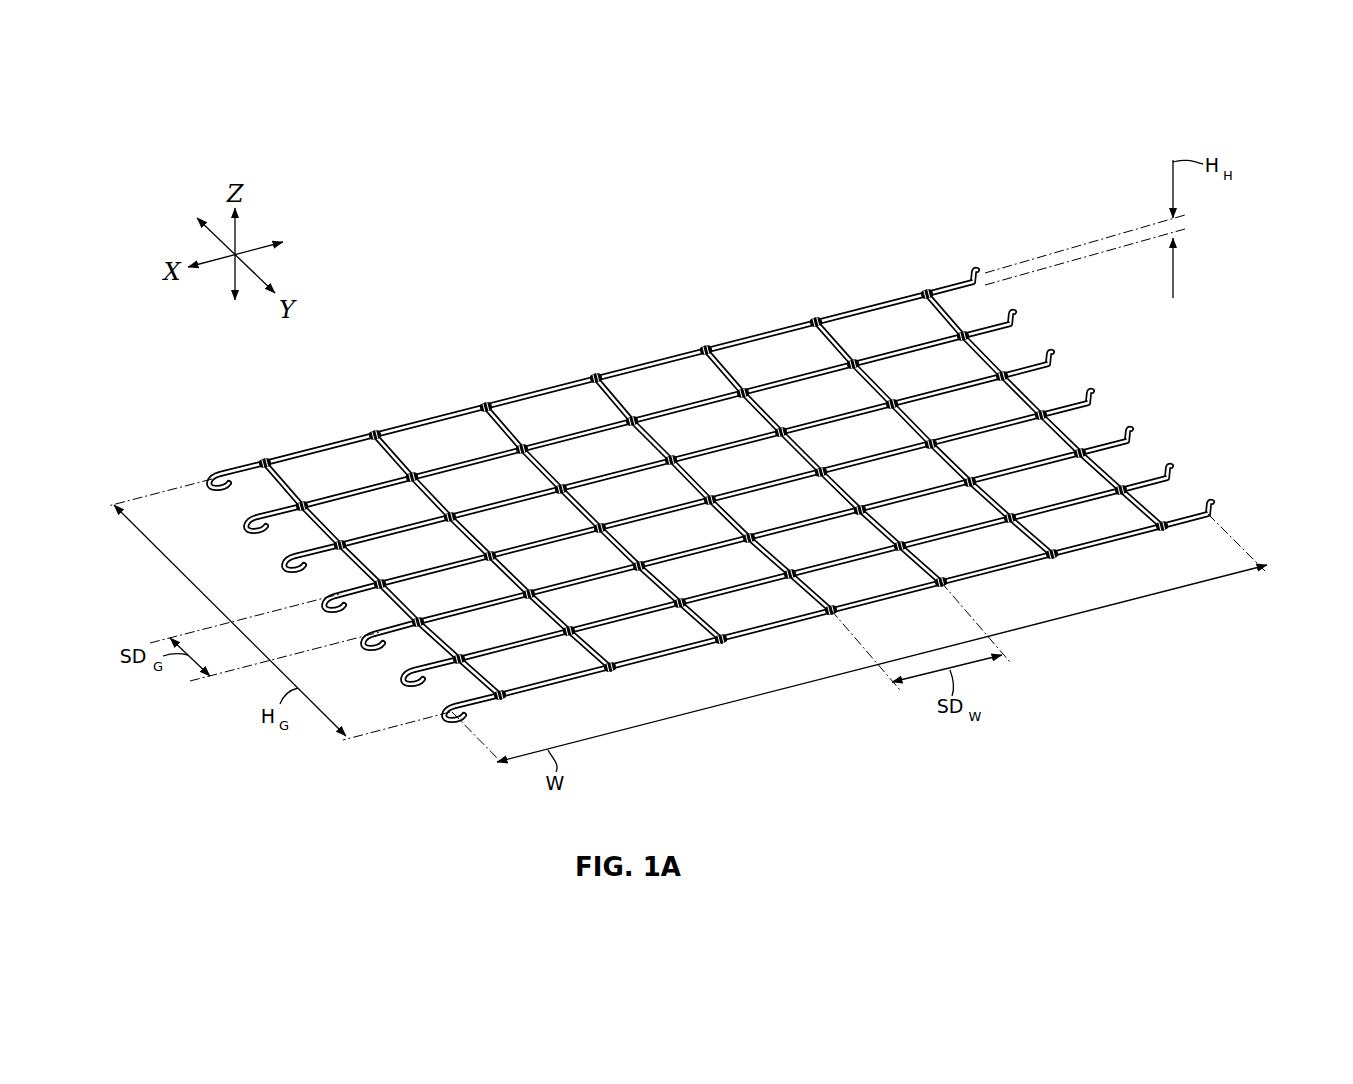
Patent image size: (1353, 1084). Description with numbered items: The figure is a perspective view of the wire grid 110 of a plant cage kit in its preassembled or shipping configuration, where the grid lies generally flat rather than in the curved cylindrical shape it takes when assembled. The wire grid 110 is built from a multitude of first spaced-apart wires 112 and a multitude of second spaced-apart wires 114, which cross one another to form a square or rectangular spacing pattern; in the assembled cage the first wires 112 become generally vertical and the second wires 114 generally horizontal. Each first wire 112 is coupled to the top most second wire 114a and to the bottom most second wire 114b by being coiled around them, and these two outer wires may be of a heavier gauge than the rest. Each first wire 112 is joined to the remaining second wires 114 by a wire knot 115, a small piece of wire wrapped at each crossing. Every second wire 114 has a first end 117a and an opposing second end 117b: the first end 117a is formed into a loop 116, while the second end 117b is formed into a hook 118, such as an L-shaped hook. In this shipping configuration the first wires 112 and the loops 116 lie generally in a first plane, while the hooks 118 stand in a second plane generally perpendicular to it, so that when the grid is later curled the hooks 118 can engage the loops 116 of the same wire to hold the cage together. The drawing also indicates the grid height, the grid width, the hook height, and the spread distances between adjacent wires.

The wire grid 110 is at (708, 472).
The first spaced-apart wires 112 is at (834, 343).
The second spaced-apart wires 114 is at (713, 494).
The top most second wire 114a is at (490, 405).
The bottom most second wire 114b is at (694, 648).
The wire knot 115 is at (860, 359).
The loop 116 is at (216, 484).
The first end 117a is at (243, 481).
The second end 117b is at (947, 268).
The hook 118 is at (976, 272).